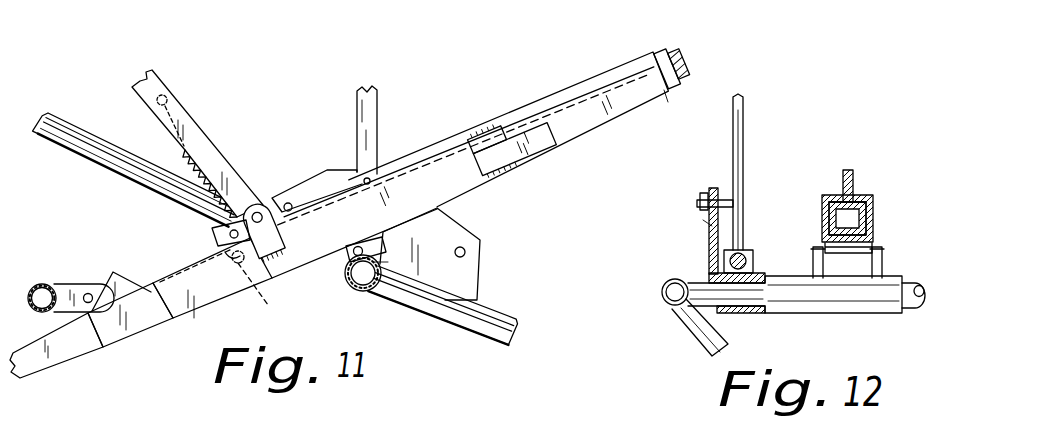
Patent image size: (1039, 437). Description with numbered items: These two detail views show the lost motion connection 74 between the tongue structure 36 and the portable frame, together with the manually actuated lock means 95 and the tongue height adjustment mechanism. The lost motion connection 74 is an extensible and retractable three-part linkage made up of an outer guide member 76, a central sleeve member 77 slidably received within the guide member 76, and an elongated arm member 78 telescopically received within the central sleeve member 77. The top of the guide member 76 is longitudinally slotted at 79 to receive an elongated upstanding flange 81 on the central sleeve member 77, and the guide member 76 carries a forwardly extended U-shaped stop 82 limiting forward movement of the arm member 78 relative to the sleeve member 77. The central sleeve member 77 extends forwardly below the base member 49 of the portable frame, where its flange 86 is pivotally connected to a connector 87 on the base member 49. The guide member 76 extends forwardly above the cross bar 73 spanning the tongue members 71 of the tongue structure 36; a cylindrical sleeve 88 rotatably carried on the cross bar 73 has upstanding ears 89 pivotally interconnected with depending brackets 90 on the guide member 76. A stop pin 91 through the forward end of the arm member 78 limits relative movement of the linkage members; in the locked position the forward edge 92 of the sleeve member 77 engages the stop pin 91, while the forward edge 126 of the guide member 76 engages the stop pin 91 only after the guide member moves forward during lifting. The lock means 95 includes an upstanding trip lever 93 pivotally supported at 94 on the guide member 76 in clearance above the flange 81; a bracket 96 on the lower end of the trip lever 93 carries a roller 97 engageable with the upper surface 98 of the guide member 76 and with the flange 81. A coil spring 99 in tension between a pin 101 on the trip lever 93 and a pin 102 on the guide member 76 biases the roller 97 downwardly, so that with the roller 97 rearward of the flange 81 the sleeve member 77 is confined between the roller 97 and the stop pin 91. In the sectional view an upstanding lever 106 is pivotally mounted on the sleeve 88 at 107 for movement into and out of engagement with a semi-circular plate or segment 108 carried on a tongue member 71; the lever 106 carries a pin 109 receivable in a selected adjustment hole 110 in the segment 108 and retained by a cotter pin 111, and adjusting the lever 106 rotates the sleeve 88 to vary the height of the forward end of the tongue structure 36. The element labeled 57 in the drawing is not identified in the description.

In FIG. 11, the tongue structure 36 is at (460, 330).
In FIG. 11, the forward transverse base member 49 is at (40, 283).
In FIG. 11, the frame member 57 is at (405, 427).
In FIG. 11, the tongue members 71 is at (90, 137).
In FIG. 12, the tongue members 71 is at (664, 297).
In FIG. 11, the cross bar 73 is at (362, 292).
In FIG. 12, the cross bar 73 is at (912, 308).
In FIG. 11, the lost motion connection 74 is at (516, 205).
In FIG. 11, the outer guide member 76 is at (213, 297).
In FIG. 12, the outer guide member 76 is at (876, 222).
In FIG. 11, the central sleeve member 77 is at (128, 320).
In FIG. 12, the central sleeve member 77 is at (823, 208).
In FIG. 11, the arm member 78 is at (52, 352).
In FIG. 12, the arm member 78 is at (838, 220).
In FIG. 12, the longitudinal slot 79 is at (834, 200).
In FIG. 11, the upstanding flange 81 is at (590, 80).
In FIG. 12, the upstanding flange 81 is at (854, 172).
In FIG. 11, the U-shape stop 82 is at (538, 143).
In FIG. 11, the flange 86 is at (112, 271).
In FIG. 11, the connector 87 is at (66, 283).
In FIG. 11, the cylindrical sleeve 88 is at (373, 292).
In FIG. 12, the cylindrical sleeve 88 is at (838, 284).
In FIG. 11, the upstanding ears 89 is at (348, 262).
In FIG. 12, the upstanding ears 89 is at (815, 264).
In FIG. 12, the depending brackets 90 is at (866, 262).
In FIG. 11, the stop pin 91 is at (688, 100).
In FIG. 11, the forward edge 92 is at (664, 60).
In FIG. 11, the trip lever 93 is at (155, 82).
In FIG. 11, the pivot 94 is at (262, 212).
In FIG. 11, the lock means 95 is at (253, 160).
In FIG. 12, the lock means 95 is at (827, 153).
In FIG. 11, the bracket 96 is at (244, 203).
In FIG. 11, the roller 97 is at (228, 238).
In FIG. 11, the upper surface 98 is at (178, 272).
In FIG. 11, the coil spring 99 is at (214, 226).
In FIG. 11, the pin 101 is at (176, 92).
In FIG. 11, the pin 102 is at (261, 289).
In FIG. 11, the upstanding lever 106 is at (372, 104).
In FIG. 12, the upstanding lever 106 is at (746, 128).
In FIG. 12, the pivot 107 is at (722, 263).
In FIG. 11, the semi-circular plate 108 is at (456, 232).
In FIG. 12, the semi-circular plate 108 is at (708, 251).
In FIG. 12, the pin 109 is at (697, 204).
In FIG. 11, the adjustment hole 110 is at (466, 253).
In FIG. 12, the adjustment hole 110 is at (704, 222).
In FIG. 12, the cotter pin 111 is at (706, 196).
In FIG. 11, the forward edge 126 is at (667, 100).